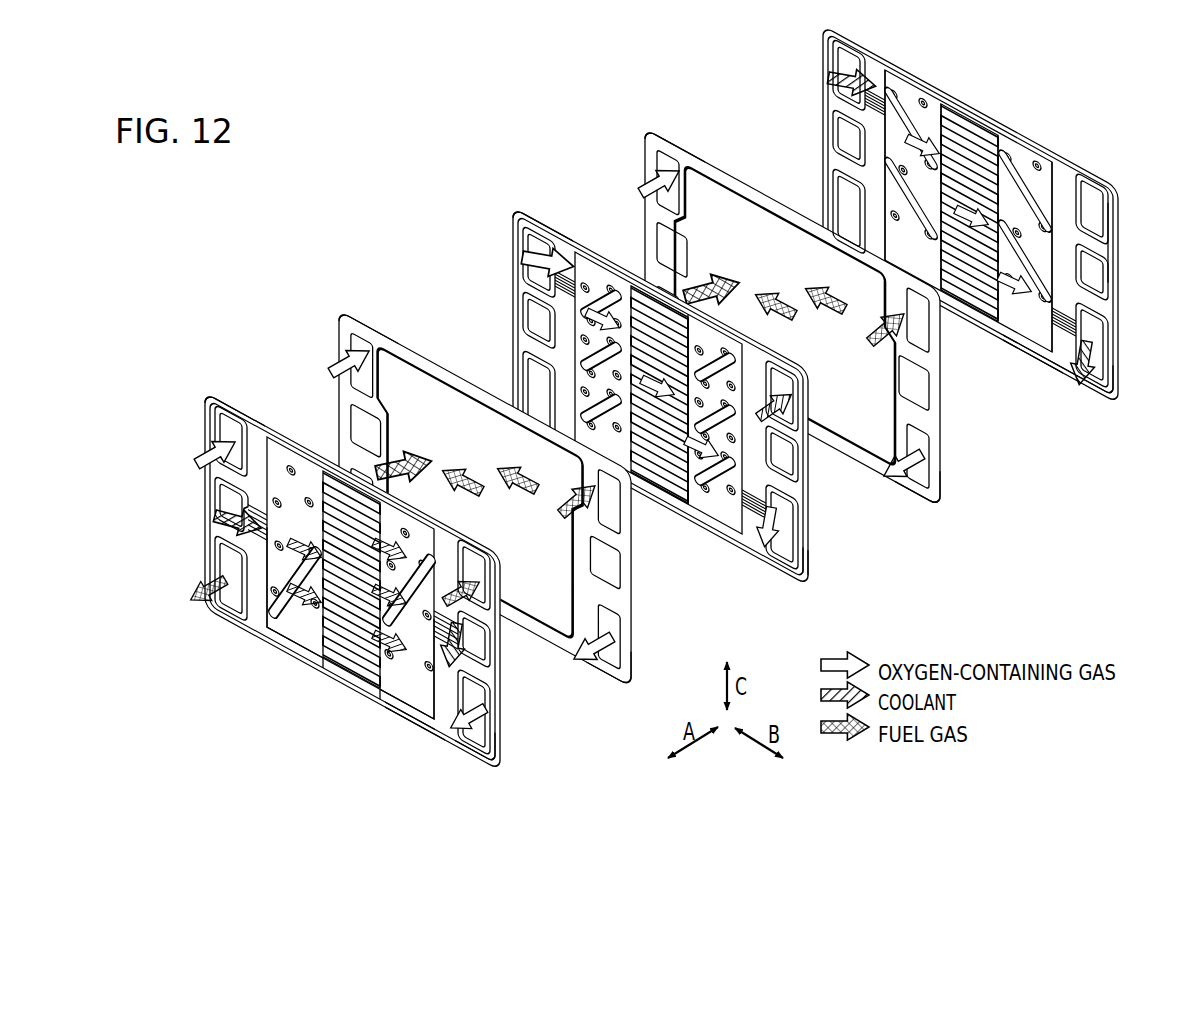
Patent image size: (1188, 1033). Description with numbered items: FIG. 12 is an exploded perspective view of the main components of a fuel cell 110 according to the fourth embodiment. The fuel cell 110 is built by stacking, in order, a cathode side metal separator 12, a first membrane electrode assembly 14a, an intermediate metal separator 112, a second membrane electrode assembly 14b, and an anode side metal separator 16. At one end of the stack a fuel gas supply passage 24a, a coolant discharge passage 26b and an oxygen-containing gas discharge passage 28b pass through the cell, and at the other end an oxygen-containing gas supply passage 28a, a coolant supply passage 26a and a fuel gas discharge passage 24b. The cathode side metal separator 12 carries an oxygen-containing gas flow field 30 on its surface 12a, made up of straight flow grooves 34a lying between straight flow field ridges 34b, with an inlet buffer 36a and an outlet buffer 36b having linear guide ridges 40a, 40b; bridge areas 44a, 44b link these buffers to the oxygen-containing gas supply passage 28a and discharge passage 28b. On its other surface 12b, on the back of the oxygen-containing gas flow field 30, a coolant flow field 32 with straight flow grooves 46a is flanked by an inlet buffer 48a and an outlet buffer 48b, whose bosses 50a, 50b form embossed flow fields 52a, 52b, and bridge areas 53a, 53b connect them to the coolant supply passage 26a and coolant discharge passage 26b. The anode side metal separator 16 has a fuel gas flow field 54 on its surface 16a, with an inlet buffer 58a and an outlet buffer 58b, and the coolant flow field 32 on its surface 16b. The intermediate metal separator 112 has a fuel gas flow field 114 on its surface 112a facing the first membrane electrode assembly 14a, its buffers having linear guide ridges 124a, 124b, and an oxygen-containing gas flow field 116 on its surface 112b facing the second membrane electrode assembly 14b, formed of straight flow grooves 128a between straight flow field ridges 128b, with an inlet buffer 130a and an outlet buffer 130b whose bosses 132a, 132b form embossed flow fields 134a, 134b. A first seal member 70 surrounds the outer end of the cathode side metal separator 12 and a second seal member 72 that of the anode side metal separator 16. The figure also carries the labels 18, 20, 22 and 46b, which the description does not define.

The fuel cell 110 is at (279, 199).
The cathode side metal separator 12 is at (1115, 195).
The surface 12a is at (1040, 370).
The surface 12b is at (1017, 357).
The first membrane electrode assembly 14a is at (652, 131).
The second membrane electrode assembly 14b is at (338, 311).
The anode side metal separator 16 is at (204, 392).
The surface 16a is at (410, 723).
The surface 16b is at (427, 740).
The membrane electrode assembly body 18 is at (608, 676).
The resin frame member 20 is at (565, 627).
The solid polymer electrolyte membrane 22 is at (565, 602).
The fuel gas supply passage 24a is at (480, 570).
The fuel gas discharge passage 24b is at (223, 558).
The coolant supply passage 26a is at (227, 503).
The coolant discharge passage 26b is at (477, 648).
The oxygen-containing gas supply passage 28a is at (227, 432).
The oxygen-containing gas discharge passage 28b is at (480, 700).
The oxygen-containing gas flow field 30 is at (988, 142).
The coolant flow field 32 is at (302, 460).
The straight flow grooves 34a is at (960, 290).
The straight flow field ridges 34b is at (990, 320).
The inlet buffer 36a is at (920, 88).
The outlet buffer 36b is at (1038, 172).
The linear guide ridges 40a is at (904, 78).
The linear guide ridges 40b is at (1037, 222).
The bridge area 44a is at (553, 300).
The bridge area 44b is at (765, 506).
The straight flow grooves 46a is at (347, 640).
The fuel gas flow grooves 46b is at (337, 627).
The inlet buffer 48a is at (267, 587).
The outlet buffer 48b is at (380, 627).
The bosses 50a is at (910, 212).
The bosses 50b is at (1013, 213).
The embossed flow field 52a is at (283, 553).
The embossed flow field 52b is at (490, 608).
The bridge area 53a is at (253, 492).
The bridge area 53b is at (483, 678).
The fuel gas flow field 54 is at (364, 462).
The inlet buffer 58a is at (397, 693).
The outlet buffer 58b is at (290, 637).
The first seal member 70 is at (1113, 380).
The second seal member 72 is at (493, 743).
The intermediate metal separator 112 is at (513, 209).
The surface 112a is at (800, 533).
The surface 112b is at (803, 553).
The fuel gas flow field 114 is at (663, 462).
The oxygen-containing gas flow field 116 is at (677, 474).
The linear guide ridges 124a is at (717, 432).
The linear guide ridges 124b is at (583, 410).
The straight flow grooves 128a is at (638, 305).
The straight flow field ridges 128b is at (662, 315).
The inlet buffer 130a is at (592, 290).
The outlet buffer 130b is at (730, 516).
The bosses 132a is at (593, 335).
The bosses 132b is at (742, 400).
The embossed flow field 134a is at (588, 342).
The embossed flow field 134b is at (718, 428).